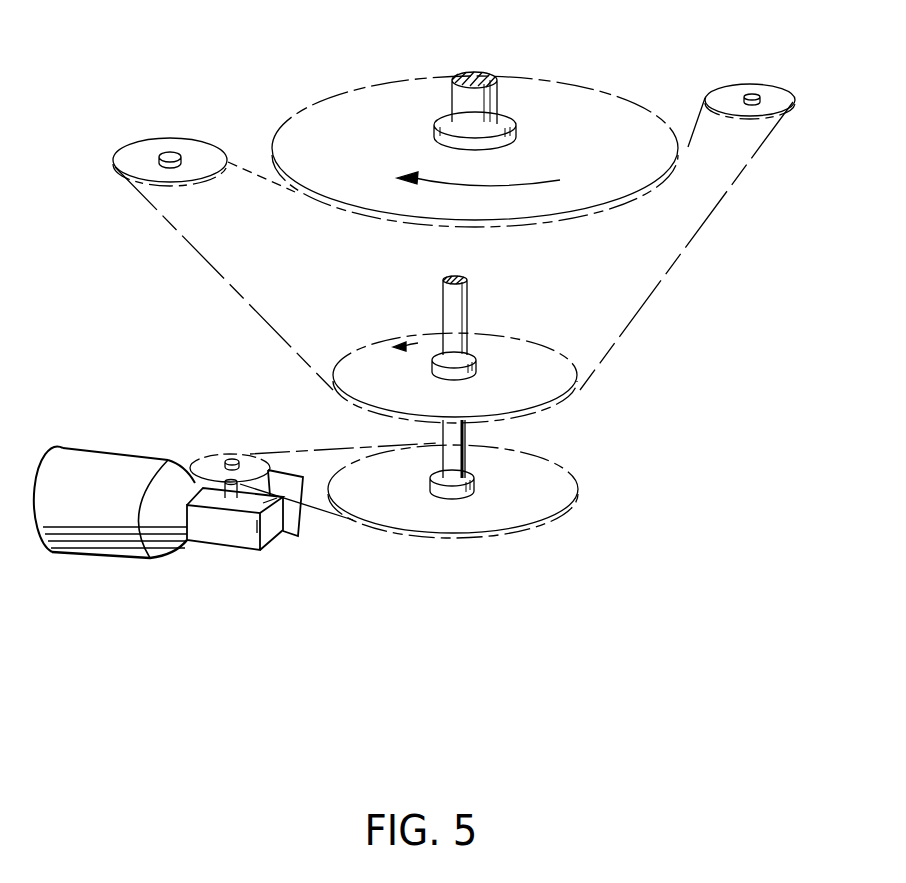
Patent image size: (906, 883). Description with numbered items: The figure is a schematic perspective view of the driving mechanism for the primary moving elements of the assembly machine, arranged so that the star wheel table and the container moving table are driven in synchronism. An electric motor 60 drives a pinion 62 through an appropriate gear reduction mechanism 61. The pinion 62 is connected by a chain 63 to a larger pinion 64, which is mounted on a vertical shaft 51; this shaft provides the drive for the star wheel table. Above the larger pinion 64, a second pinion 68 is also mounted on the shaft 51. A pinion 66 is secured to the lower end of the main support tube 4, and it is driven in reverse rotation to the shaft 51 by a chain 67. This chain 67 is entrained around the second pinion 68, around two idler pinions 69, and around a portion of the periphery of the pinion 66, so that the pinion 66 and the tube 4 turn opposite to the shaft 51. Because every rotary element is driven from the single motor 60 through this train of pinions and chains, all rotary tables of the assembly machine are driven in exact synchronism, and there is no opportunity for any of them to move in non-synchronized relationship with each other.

The main support tube 4 is at (487, 82).
The vertical shaft 51 is at (467, 302).
The electric motor 60 is at (113, 535).
The gear reduction mechanism 61 is at (237, 533).
The pinion 62 is at (215, 465).
The chain 63 is at (342, 522).
The larger pinion 64 is at (542, 497).
The pinion 66 is at (568, 98).
The chain 67 is at (687, 248).
The second pinion 68 is at (558, 383).
The idler pinions 69 is at (192, 157).